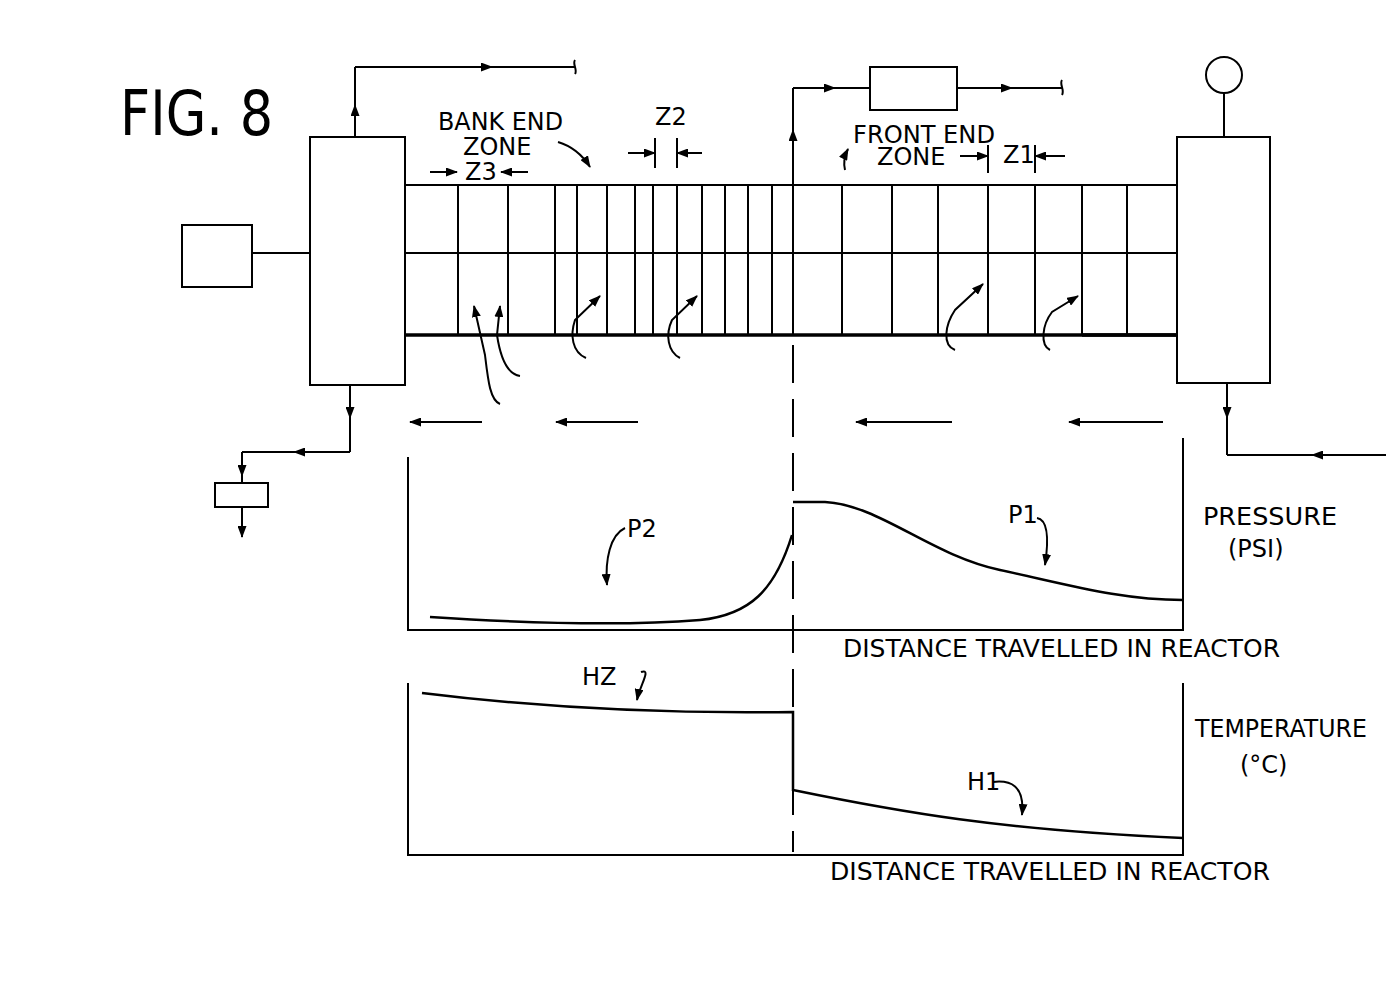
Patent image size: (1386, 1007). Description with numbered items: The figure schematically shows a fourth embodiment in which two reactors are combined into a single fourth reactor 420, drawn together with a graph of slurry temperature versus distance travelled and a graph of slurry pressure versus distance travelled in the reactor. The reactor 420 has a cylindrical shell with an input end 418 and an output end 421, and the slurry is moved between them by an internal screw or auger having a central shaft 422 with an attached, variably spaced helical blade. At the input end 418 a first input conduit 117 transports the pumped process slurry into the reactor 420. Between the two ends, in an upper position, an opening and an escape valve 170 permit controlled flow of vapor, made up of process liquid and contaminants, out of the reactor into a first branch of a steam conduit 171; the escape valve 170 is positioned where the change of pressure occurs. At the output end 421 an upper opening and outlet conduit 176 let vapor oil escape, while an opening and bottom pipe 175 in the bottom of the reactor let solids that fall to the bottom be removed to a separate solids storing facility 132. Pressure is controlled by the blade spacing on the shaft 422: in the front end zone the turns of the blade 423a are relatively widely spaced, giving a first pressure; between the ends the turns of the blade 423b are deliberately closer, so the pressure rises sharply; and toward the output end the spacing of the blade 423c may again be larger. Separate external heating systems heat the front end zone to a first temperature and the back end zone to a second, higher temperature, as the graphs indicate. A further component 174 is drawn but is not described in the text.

The first input conduit 117 is at (1288, 455).
The solids storing facility 132 is at (230, 492).
The escape valve 170 is at (910, 75).
The steam conduit 171 is at (975, 87).
The pump 174 is at (192, 258).
The bottom pipe 175 is at (350, 428).
The outlet conduit 176 is at (468, 67).
The input end 418 is at (1158, 341).
The fourth reactor 420 is at (1112, 150).
The output end 421 is at (417, 345).
The central shaft 422 is at (1150, 246).
The blade in front end zone 423a is at (1028, 330).
The blade between the ends 423b is at (658, 336).
The blade toward output end 423c is at (527, 366).